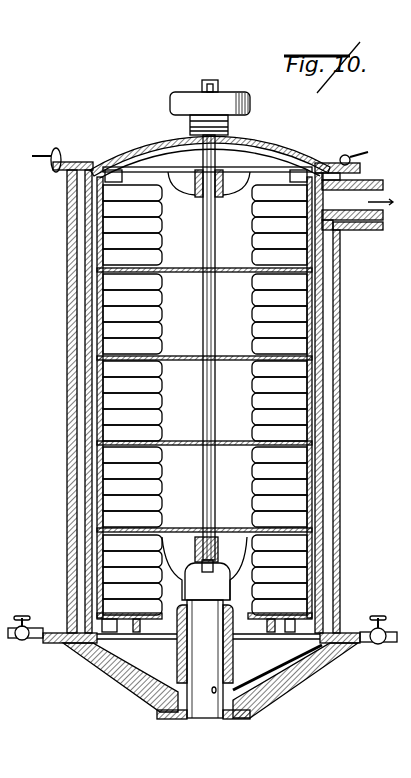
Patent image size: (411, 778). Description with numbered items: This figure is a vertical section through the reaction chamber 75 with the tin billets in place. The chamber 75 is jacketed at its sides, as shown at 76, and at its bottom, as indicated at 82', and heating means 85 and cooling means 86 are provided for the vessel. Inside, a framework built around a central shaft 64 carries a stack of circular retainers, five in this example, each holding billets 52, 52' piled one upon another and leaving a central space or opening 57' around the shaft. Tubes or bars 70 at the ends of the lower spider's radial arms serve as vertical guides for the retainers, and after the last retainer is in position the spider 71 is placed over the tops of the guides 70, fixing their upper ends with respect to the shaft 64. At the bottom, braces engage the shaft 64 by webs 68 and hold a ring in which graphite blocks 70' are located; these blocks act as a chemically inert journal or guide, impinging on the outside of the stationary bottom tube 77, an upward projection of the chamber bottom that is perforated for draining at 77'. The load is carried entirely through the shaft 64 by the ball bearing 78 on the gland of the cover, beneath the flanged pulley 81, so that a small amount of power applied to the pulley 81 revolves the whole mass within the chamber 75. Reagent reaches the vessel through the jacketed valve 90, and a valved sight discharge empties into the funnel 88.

The flanged pulley 81 is at (252, 106).
The ball bearing 78 is at (232, 124).
The tubes or bars 70 is at (210, 143).
The spider 71 is at (270, 160).
The jacketed valve 90 is at (107, 152).
The funnel 88 is at (395, 176).
The jacket 76 is at (340, 296).
The reaction chamber 75 is at (323, 349).
The central shaft 64 is at (150, 225).
The billets 52 is at (148, 314).
The filter discs 52' is at (262, 401).
The central space or opening 57' is at (204, 470).
The webs 68 is at (204, 568).
The graphite blocks 70' is at (204, 638).
The bottom tube 77 is at (203, 659).
The drain perforations 77' is at (120, 677).
The bottom jacket 82' is at (295, 680).
The heating means 85 is at (377, 643).
The cooling means 86 is at (23, 642).